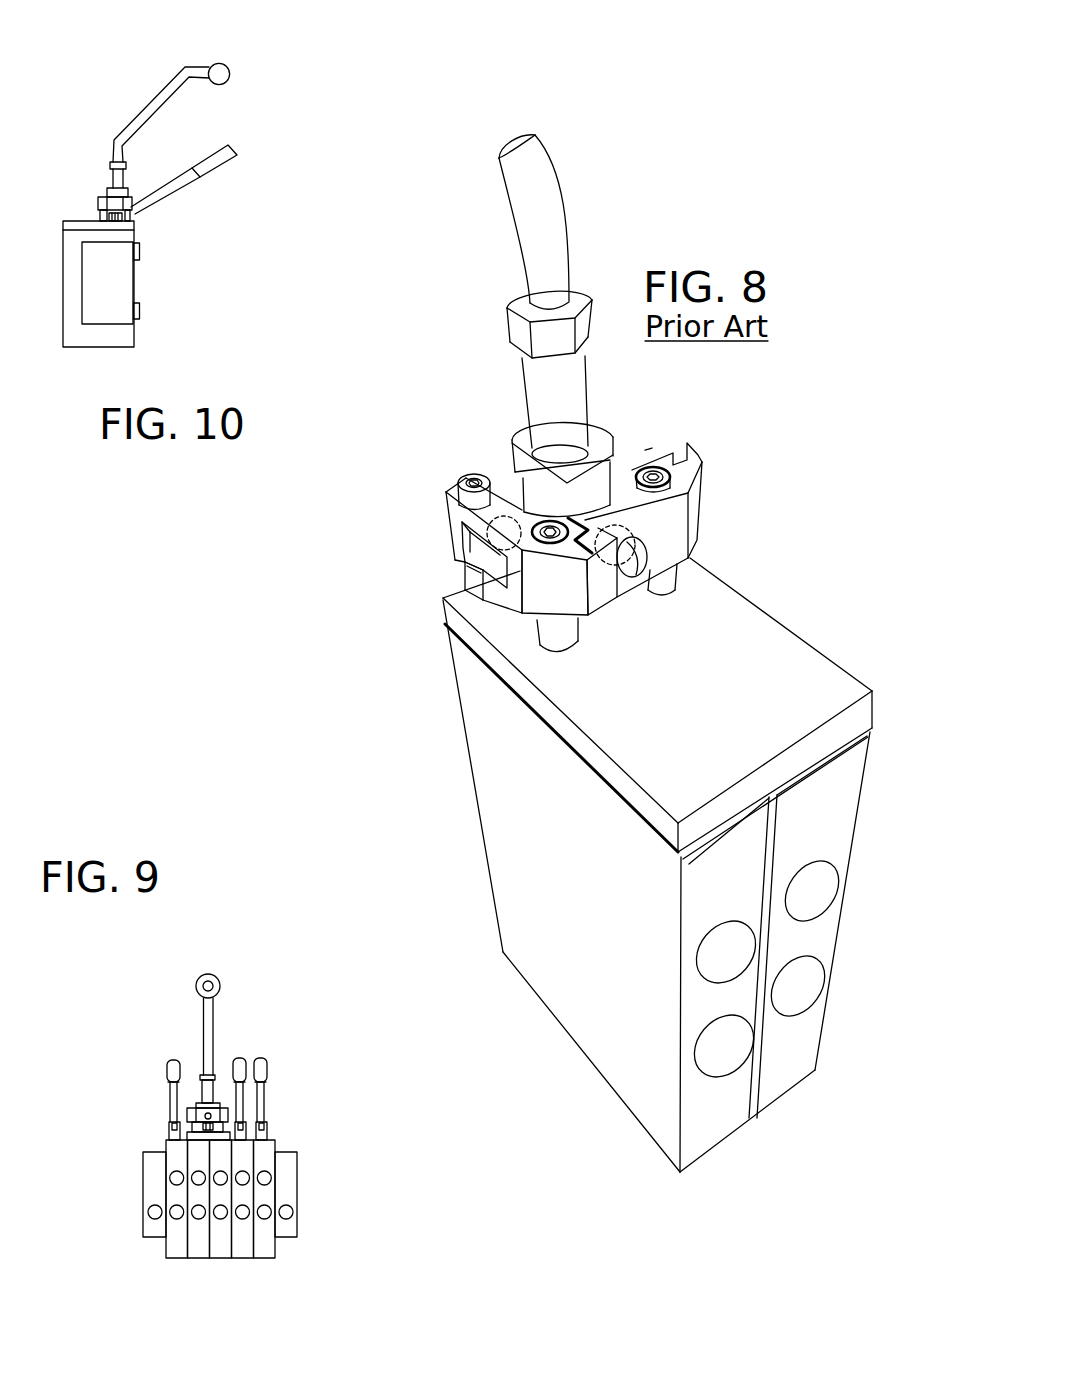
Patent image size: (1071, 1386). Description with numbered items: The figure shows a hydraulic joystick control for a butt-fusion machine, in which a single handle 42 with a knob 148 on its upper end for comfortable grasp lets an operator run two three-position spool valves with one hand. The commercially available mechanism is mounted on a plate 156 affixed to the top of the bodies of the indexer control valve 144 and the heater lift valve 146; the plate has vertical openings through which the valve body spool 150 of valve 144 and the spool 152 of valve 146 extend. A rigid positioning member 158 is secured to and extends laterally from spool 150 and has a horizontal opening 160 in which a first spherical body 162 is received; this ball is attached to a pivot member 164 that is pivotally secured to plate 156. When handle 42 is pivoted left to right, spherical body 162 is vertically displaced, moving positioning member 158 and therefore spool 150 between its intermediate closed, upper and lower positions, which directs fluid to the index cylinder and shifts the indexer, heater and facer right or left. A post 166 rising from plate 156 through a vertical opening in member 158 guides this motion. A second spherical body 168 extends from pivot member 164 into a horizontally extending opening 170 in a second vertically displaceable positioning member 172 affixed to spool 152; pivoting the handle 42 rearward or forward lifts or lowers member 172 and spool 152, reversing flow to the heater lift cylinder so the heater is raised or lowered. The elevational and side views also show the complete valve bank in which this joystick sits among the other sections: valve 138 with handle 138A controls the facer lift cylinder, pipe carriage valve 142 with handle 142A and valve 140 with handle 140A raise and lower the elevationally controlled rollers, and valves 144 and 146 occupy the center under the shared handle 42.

In FIG. 10, the handle 42 is at (143, 125).
In FIG. 9, the handle 42 is at (206, 1020).
In FIG. 8, the handle 42 is at (523, 225).
In FIG. 10, the knob 148 is at (222, 65).
In FIG. 9, the knob 148 is at (206, 974).
In FIG. 9, the valve 138 is at (172, 1253).
In FIG. 9, the handle 138A is at (172, 1097).
In FIG. 10, the valve 140 is at (122, 337).
In FIG. 9, the valve 140 is at (267, 1253).
In FIG. 10, the handle 140A is at (164, 198).
In FIG. 9, the handle 140A is at (261, 1107).
In FIG. 9, the pipe carriage valve 142 is at (244, 1253).
In FIG. 9, the handle 142A is at (240, 1097).
In FIG. 9, the index control valve 144 is at (200, 1255).
In FIG. 8, the index control valve 144 is at (723, 1113).
In FIG. 9, the heater lift valve 146 is at (220, 1255).
In FIG. 8, the heater lift valve 146 is at (810, 1043).
In FIG. 8, the valve body spool 150 is at (558, 640).
In FIG. 8, the spool 152 is at (665, 587).
In FIG. 8, the plate 156 is at (765, 648).
In FIG. 8, the rigid positioning member 158 is at (517, 602).
In FIG. 8, the horizontal extending opening 160 is at (487, 568).
In FIG. 8, the first spherical body 162 is at (483, 550).
In FIG. 8, the pivot member 164 is at (612, 500).
In FIG. 8, the post 166 is at (475, 475).
In FIG. 8, the second spherical body 168 is at (622, 560).
In FIG. 8, the horizontally extending opening 170 is at (660, 558).
In FIG. 8, the second vertically displaceable positioning member 172 is at (693, 492).